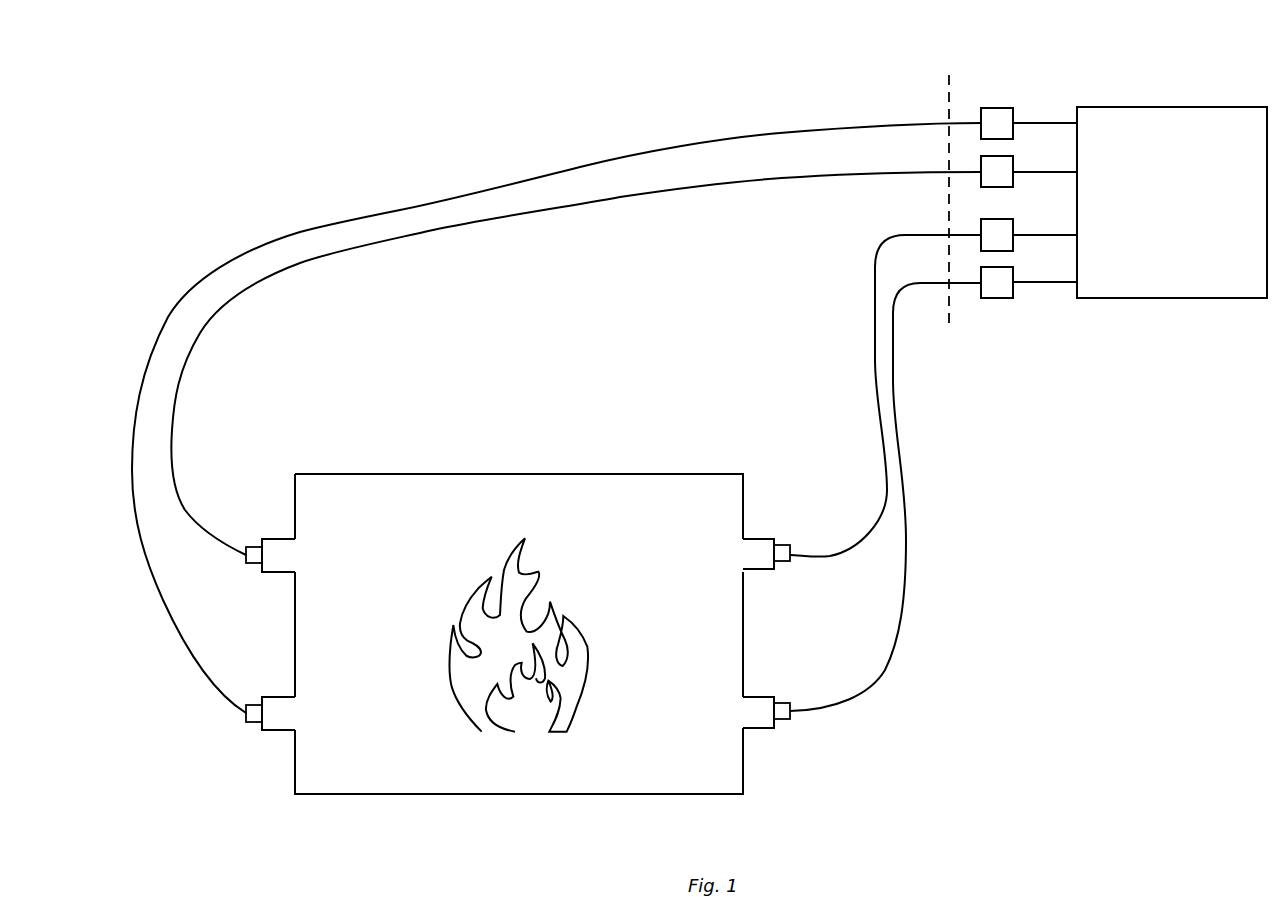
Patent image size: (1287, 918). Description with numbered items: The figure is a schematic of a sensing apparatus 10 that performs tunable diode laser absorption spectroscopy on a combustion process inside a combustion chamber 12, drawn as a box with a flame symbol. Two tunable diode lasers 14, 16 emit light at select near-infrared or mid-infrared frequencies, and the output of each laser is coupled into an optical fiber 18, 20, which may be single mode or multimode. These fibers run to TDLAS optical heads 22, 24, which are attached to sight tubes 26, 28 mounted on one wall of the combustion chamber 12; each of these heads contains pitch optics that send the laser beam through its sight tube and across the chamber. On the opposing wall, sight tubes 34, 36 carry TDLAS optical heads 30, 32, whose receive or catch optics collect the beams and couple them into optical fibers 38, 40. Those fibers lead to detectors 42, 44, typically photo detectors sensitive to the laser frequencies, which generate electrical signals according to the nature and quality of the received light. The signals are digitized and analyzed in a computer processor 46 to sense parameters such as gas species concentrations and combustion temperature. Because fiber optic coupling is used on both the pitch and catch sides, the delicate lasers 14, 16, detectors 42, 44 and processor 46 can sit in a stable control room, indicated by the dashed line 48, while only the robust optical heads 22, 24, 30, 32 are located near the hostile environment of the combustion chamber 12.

The sensing apparatus 10 is at (1045, 811).
The combustion chamber 12 is at (662, 795).
The tunable diode laser 14 is at (1015, 243).
The tunable diode laser 16 is at (1015, 290).
The optical fiber 18 is at (875, 267).
The optical fiber 20 is at (893, 370).
The TDLAS optical head 22 is at (783, 545).
The TDLAS optical head 24 is at (782, 722).
The sight tube 26 is at (755, 537).
The sight tube 28 is at (757, 730).
The TDLAS optical head 30 is at (254, 547).
The TDLAS optical head 32 is at (253, 725).
The sight tube 34 is at (282, 538).
The sight tube 36 is at (281, 732).
The optical fiber 38 is at (330, 262).
The optical fiber 40 is at (345, 222).
The detector 42 is at (1015, 117).
The detector 44 is at (1015, 178).
The computer processor 46 is at (1140, 202).
The dashed line 48 is at (951, 108).